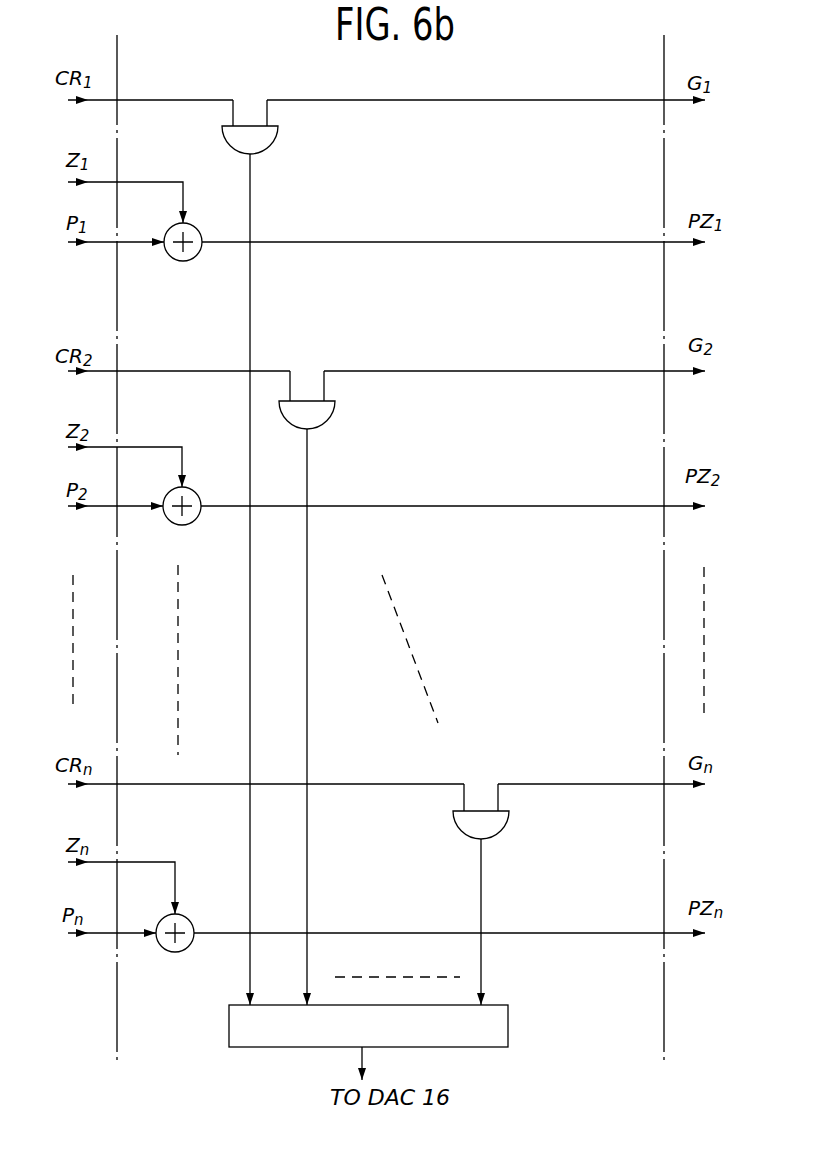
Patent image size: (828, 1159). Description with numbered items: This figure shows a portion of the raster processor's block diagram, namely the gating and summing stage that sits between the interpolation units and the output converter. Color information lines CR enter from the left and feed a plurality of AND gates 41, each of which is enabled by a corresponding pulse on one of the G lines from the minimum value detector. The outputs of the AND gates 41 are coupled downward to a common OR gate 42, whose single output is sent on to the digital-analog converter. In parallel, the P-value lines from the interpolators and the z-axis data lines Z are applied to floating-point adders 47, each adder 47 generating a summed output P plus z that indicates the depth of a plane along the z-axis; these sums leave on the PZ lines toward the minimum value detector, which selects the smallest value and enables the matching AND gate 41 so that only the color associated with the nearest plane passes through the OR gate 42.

The AND gate 41 is at (279, 138).
The floating-point adder 47 is at (195, 256).
The OR gate 42 is at (507, 1012).